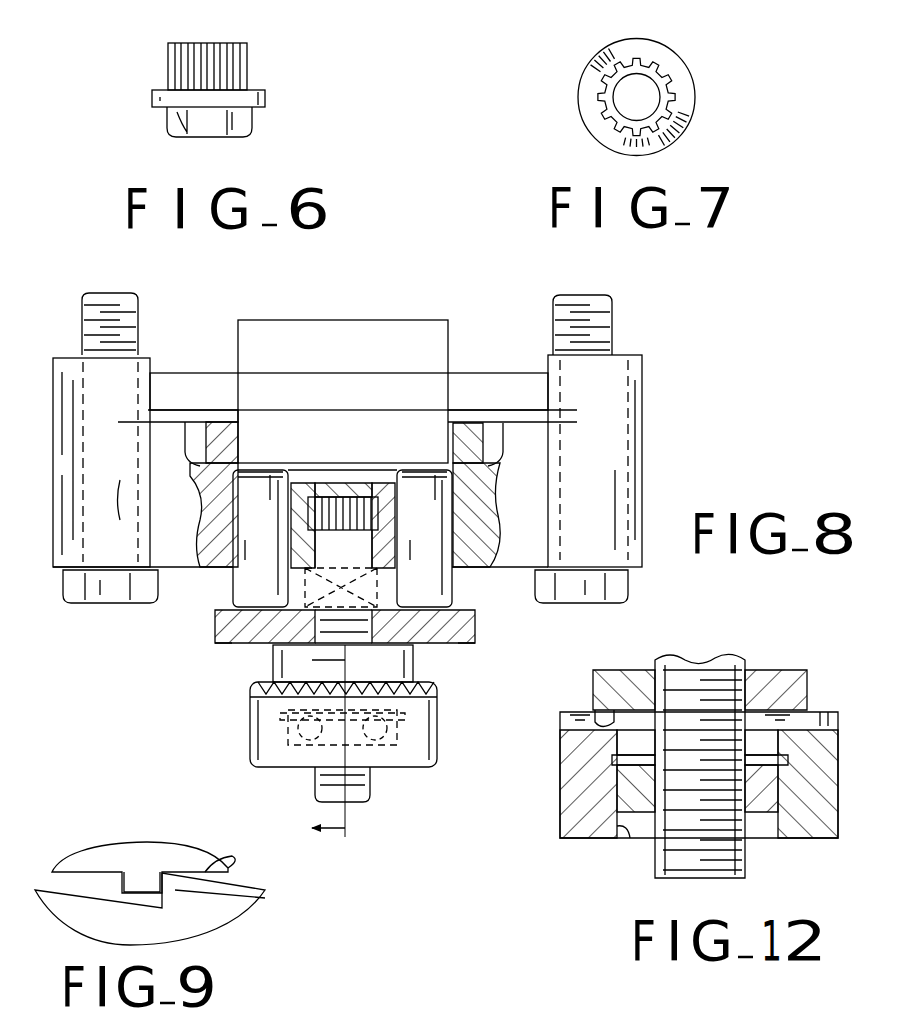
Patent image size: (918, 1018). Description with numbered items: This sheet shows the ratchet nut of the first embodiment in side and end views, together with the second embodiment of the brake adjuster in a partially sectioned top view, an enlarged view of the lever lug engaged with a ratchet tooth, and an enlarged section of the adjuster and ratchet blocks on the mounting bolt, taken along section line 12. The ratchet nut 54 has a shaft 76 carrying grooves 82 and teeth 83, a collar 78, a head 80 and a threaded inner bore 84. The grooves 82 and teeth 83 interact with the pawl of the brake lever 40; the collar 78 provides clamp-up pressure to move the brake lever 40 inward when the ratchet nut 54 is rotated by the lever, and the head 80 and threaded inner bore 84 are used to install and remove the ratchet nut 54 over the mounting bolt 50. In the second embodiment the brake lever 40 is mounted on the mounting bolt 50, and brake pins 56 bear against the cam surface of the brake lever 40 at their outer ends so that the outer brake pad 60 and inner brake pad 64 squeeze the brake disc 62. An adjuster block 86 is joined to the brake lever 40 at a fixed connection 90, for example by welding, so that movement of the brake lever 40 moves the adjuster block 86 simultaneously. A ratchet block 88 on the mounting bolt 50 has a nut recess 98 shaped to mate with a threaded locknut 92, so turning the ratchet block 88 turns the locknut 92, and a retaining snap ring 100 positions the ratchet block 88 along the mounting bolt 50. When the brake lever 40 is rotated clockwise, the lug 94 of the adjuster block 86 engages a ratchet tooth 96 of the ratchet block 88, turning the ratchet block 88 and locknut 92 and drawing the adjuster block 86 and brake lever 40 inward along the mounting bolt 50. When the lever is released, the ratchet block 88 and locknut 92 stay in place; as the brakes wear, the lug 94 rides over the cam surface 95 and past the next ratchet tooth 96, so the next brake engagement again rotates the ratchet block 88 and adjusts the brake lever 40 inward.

In FIG. 8, the section line 12- 12 is at (285, 744).
In FIG. 8, the brake lever 40 is at (478, 614).
In FIG. 8, the mounting bolt 50 is at (370, 788).
In FIG. 12, the mounting bolt 50 is at (660, 859).
In FIG. 6, the ratchet nut 54 is at (219, 75).
In FIG. 7, the ratchet nut 54 is at (631, 87).
In FIG. 8, the brake pins 56 is at (417, 483).
In FIG. 8, the outer brake pad 60 is at (258, 430).
In FIG. 8, the brake disc 62 is at (455, 385).
In FIG. 8, the inner brake pad 64 is at (265, 333).
In FIG. 6, the shaft 76 is at (172, 57).
In FIG. 6, the collar 78 is at (265, 101).
In FIG. 7, the collar 78 is at (685, 130).
In FIG. 6, the head 80 is at (244, 122).
In FIG. 7, the grooves 82 is at (642, 87).
In FIG. 7, the teeth 83 is at (627, 62).
In FIG. 7, the threaded inner bore 84 is at (620, 97).
In FIG. 8, the adjuster block 86 is at (410, 667).
In FIG. 9, the adjuster block 86 is at (171, 840).
In FIG. 12, the adjuster block 86 is at (805, 681).
In FIG. 8, the ratchet block 88 is at (334, 724).
In FIG. 9, the ratchet block 88 is at (179, 911).
In FIG. 12, the ratchet block 88 is at (717, 777).
In FIG. 8, the fixed connection 90 is at (232, 642).
In FIG. 12, the threaded locknut 92 is at (762, 811).
In FIG. 8, the lug 94 is at (425, 691).
In FIG. 9, the lug 94 is at (142, 880).
In FIG. 12, the lug 94 is at (603, 719).
In FIG. 9, the cam surface 95 is at (232, 859).
In FIG. 9, the ratchet tooth 96 is at (245, 893).
In FIG. 12, the nut recess 98 is at (628, 839).
In FIG. 8, the retaining snap ring 100 is at (260, 713).
In FIG. 12, the retaining snap ring 100 is at (815, 716).